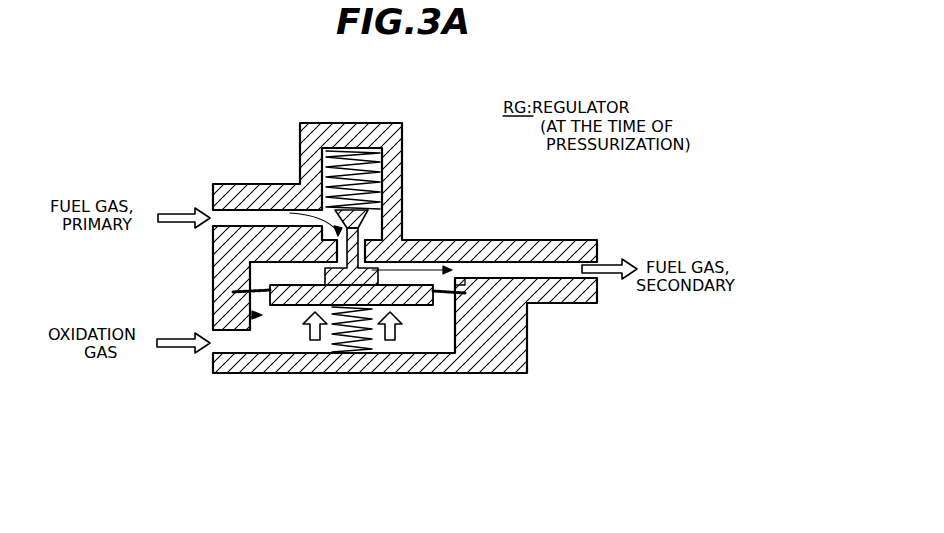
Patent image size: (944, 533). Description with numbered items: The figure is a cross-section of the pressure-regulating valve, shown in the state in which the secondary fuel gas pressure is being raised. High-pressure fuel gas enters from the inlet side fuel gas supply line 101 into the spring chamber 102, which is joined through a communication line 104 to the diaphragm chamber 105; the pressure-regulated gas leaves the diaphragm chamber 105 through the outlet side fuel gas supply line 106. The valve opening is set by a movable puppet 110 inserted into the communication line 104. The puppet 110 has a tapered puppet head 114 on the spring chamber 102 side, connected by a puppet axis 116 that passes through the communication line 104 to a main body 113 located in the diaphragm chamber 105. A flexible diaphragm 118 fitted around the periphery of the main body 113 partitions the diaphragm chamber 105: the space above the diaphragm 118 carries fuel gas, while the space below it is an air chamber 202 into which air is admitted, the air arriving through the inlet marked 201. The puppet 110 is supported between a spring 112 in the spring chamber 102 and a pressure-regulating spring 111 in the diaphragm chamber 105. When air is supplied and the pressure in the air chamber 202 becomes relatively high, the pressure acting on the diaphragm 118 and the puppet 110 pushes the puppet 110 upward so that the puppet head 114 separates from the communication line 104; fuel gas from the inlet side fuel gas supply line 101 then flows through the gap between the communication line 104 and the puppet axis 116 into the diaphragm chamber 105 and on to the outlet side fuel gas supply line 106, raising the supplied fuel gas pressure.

The inlet side fuel gas supply line 101 is at (230, 220).
The spring chamber 102 is at (330, 190).
The communication line 104 is at (364, 250).
The diaphragm chamber 105 is at (267, 272).
The outlet side fuel gas supply line 106 is at (562, 268).
The puppet 110 is at (246, 312).
The pressure-regulating spring 111 is at (380, 348).
The spring 112 is at (365, 165).
The main body 113 is at (424, 306).
The puppet head 114 is at (365, 215).
The puppet axis 116 is at (357, 226).
The diaphragm 118 is at (447, 300).
The oxidation gas inlet 201 is at (220, 346).
The air chamber 202 is at (288, 334).